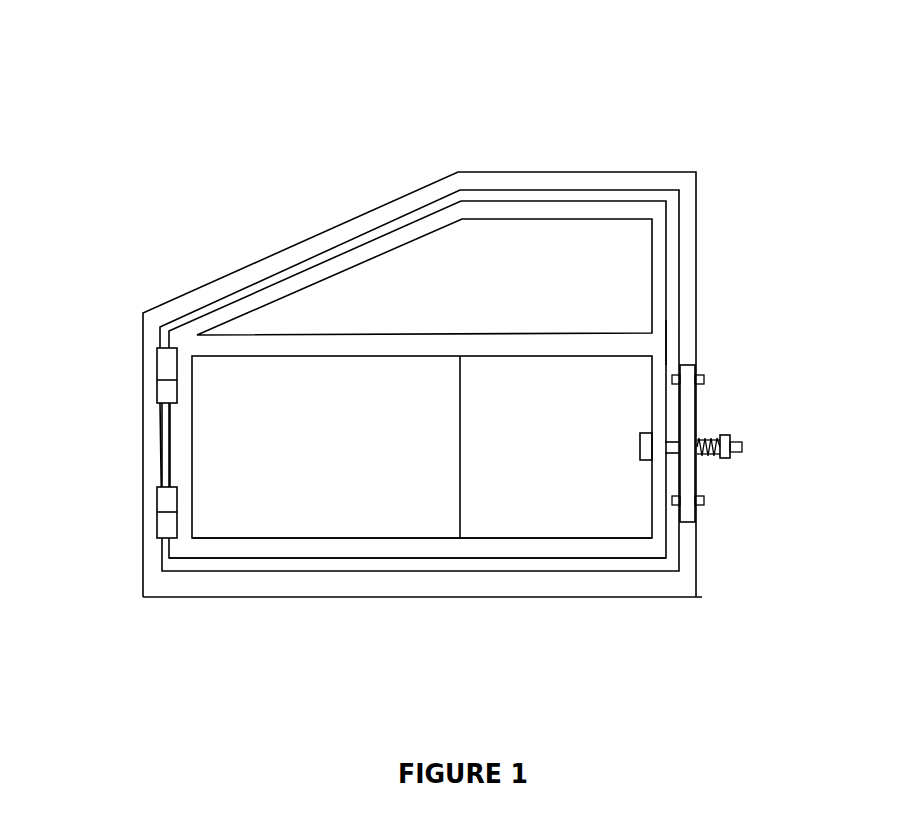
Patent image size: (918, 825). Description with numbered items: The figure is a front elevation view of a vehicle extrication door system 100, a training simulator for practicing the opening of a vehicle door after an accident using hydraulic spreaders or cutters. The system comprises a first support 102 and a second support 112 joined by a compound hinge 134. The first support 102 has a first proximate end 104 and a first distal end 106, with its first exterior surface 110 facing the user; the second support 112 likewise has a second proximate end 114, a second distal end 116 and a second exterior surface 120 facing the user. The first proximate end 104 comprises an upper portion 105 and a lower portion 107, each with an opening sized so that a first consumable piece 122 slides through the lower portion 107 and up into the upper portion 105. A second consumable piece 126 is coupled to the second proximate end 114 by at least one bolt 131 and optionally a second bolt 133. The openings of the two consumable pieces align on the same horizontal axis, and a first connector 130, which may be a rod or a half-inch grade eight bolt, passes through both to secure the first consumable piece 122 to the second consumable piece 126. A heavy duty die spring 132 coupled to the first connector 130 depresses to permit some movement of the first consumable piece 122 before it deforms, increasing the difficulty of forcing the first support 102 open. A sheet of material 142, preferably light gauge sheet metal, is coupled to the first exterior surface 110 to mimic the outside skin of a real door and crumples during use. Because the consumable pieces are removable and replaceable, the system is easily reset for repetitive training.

The vehicle extrication door system 100 is at (408, 50).
The first support 102 is at (577, 207).
The first proximate end 104 is at (663, 238).
The upper portion 105 is at (660, 335).
The first distal end 106 is at (178, 472).
The lower portion 107 is at (655, 550).
The first exterior surface 110 is at (303, 545).
The second support 112 is at (508, 170).
The second proximate end 114 is at (690, 255).
The second distal end 116 is at (155, 427).
The second exterior surface 120 is at (358, 583).
The first consumable piece 122 is at (657, 400).
The second consumable piece 126 is at (695, 418).
The first connector 130 is at (742, 445).
The bolt 131 is at (703, 372).
The spring 132 is at (708, 458).
The second bolt 133 is at (710, 502).
The compound hinge 134 is at (155, 370).
The sheet of material 142 is at (553, 507).